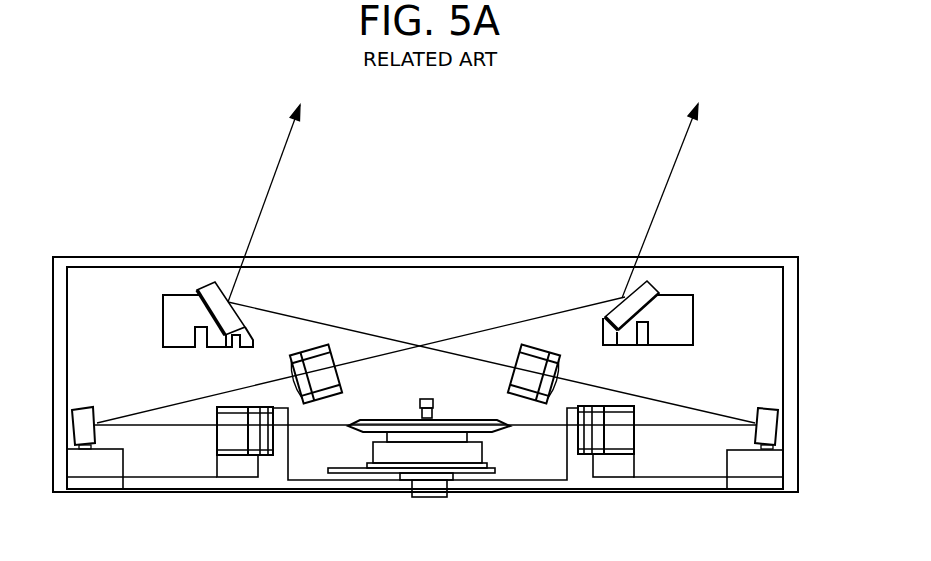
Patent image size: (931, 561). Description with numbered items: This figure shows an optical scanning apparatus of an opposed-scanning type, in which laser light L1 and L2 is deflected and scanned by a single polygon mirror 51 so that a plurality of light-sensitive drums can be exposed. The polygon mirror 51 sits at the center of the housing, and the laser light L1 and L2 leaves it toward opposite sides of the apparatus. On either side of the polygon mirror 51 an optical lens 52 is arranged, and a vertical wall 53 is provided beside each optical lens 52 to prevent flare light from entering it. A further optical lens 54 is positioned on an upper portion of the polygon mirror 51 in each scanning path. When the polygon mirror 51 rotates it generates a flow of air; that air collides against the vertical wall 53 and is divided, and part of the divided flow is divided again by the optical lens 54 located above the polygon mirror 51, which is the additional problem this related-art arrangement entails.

The polygon mirror 51 is at (430, 437).
The optical lens 52 is at (223, 433).
The vertical wall 53 is at (288, 450).
The optical lens 54 is at (337, 377).
The laser light L1 is at (357, 422).
The laser light L2 is at (503, 422).